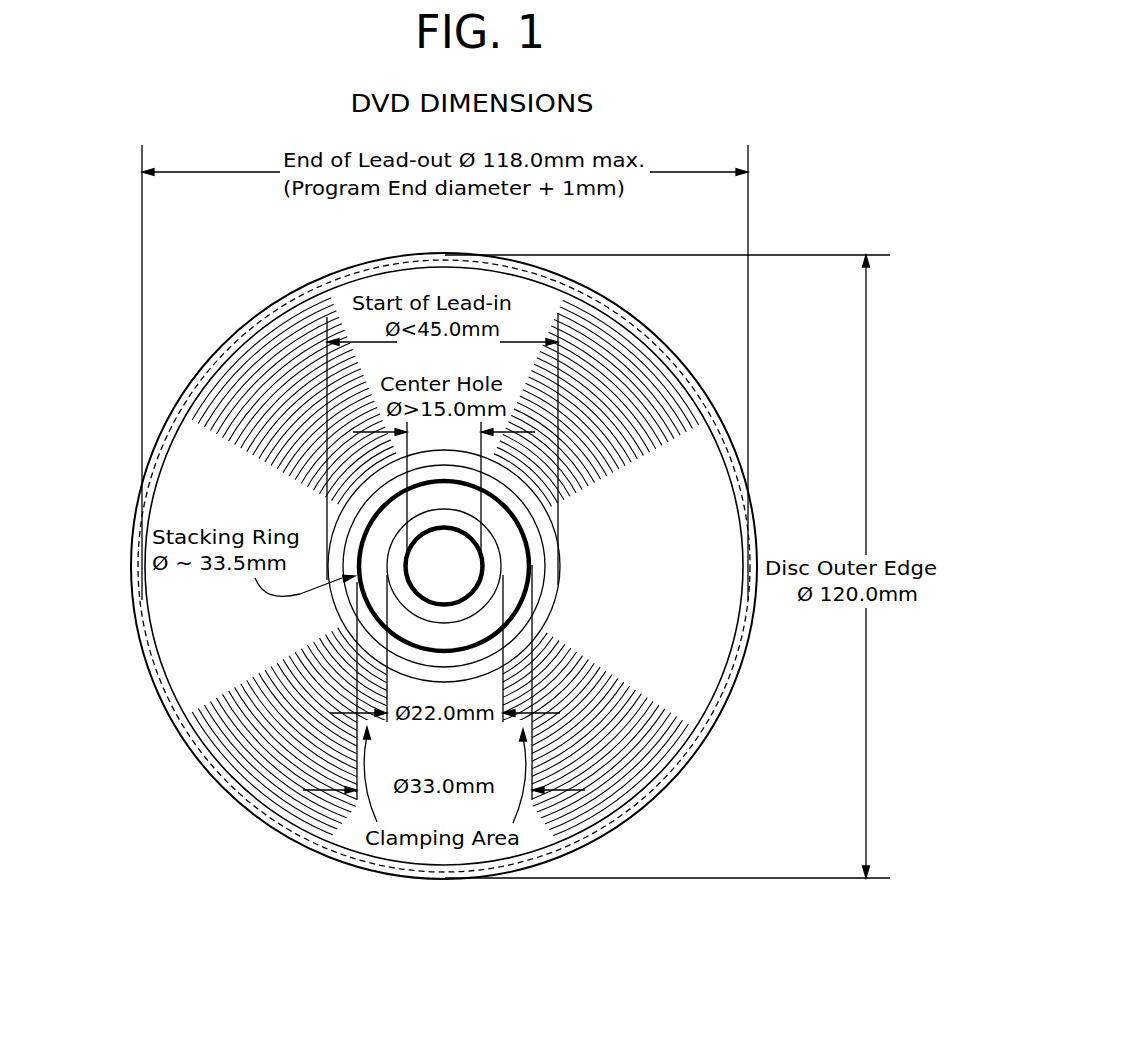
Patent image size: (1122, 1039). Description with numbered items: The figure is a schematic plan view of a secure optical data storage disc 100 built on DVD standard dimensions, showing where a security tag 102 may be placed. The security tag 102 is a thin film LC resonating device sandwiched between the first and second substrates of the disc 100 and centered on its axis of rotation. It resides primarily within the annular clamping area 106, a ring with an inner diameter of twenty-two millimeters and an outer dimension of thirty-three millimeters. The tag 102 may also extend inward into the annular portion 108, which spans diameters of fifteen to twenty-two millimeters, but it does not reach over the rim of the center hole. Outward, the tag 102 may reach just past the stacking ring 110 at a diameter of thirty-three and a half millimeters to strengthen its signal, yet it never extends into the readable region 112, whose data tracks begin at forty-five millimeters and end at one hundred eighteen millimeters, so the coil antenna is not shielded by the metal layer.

The secure optical data storage disc 100 is at (228, 830).
The security tag 102 is at (378, 524).
The annular clamping area 106 is at (380, 588).
The annular portion 108 is at (490, 578).
The stacking ring 110 is at (355, 577).
The readable region 112 is at (745, 318).